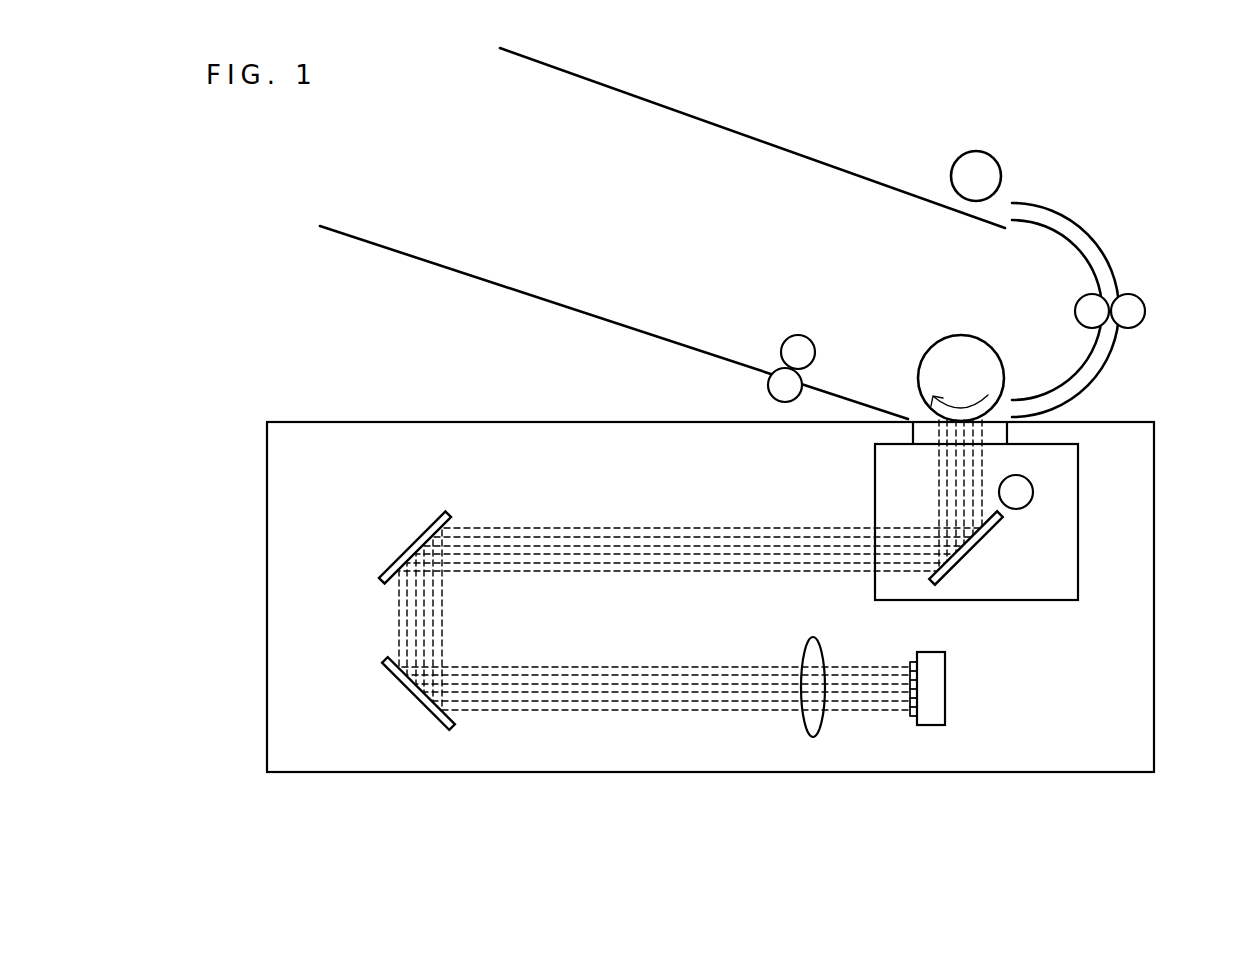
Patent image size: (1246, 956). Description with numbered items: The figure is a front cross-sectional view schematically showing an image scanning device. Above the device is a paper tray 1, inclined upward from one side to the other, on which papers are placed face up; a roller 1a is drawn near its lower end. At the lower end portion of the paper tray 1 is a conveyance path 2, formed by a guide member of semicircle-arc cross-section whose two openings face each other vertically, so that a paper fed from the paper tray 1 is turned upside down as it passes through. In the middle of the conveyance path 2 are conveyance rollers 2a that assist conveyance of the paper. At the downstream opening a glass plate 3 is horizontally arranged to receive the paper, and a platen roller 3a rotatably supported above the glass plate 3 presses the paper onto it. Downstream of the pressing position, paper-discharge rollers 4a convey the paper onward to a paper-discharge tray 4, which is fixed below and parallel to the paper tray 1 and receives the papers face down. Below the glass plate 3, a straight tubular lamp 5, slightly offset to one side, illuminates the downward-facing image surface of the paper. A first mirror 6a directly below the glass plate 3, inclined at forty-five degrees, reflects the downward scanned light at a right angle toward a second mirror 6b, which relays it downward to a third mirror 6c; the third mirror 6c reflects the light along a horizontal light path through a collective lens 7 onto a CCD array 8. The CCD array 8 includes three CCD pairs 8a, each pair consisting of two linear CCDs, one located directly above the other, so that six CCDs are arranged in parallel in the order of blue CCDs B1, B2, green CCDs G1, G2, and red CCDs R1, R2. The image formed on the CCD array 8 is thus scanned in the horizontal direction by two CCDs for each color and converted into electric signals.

The paper tray 1 is at (746, 134).
The conveyance roller 1a is at (988, 152).
The conveyance path 2 is at (1074, 230).
The conveyance rollers 2a is at (1145, 316).
The glass plate 3 is at (1008, 436).
The platen roller 3a is at (940, 340).
The paper-discharge tray 4 is at (565, 312).
The paper-discharge rollers 4a is at (796, 336).
The lamp 5 is at (1034, 490).
The first mirror 6a is at (985, 538).
The second mirror 6b is at (402, 552).
The third mirror 6c is at (428, 714).
The collective lens 7 is at (816, 737).
The CCD array 8 is at (926, 652).
The CCD pair 8a is at (1028, 620).
The first blue CCD B1 is at (917, 666).
The second blue CCD B2 is at (917, 675).
The first green CCD G1 is at (917, 684).
The second green CCD G2 is at (917, 693).
The first red CCD R1 is at (917, 702).
The second red CCD R2 is at (917, 711).